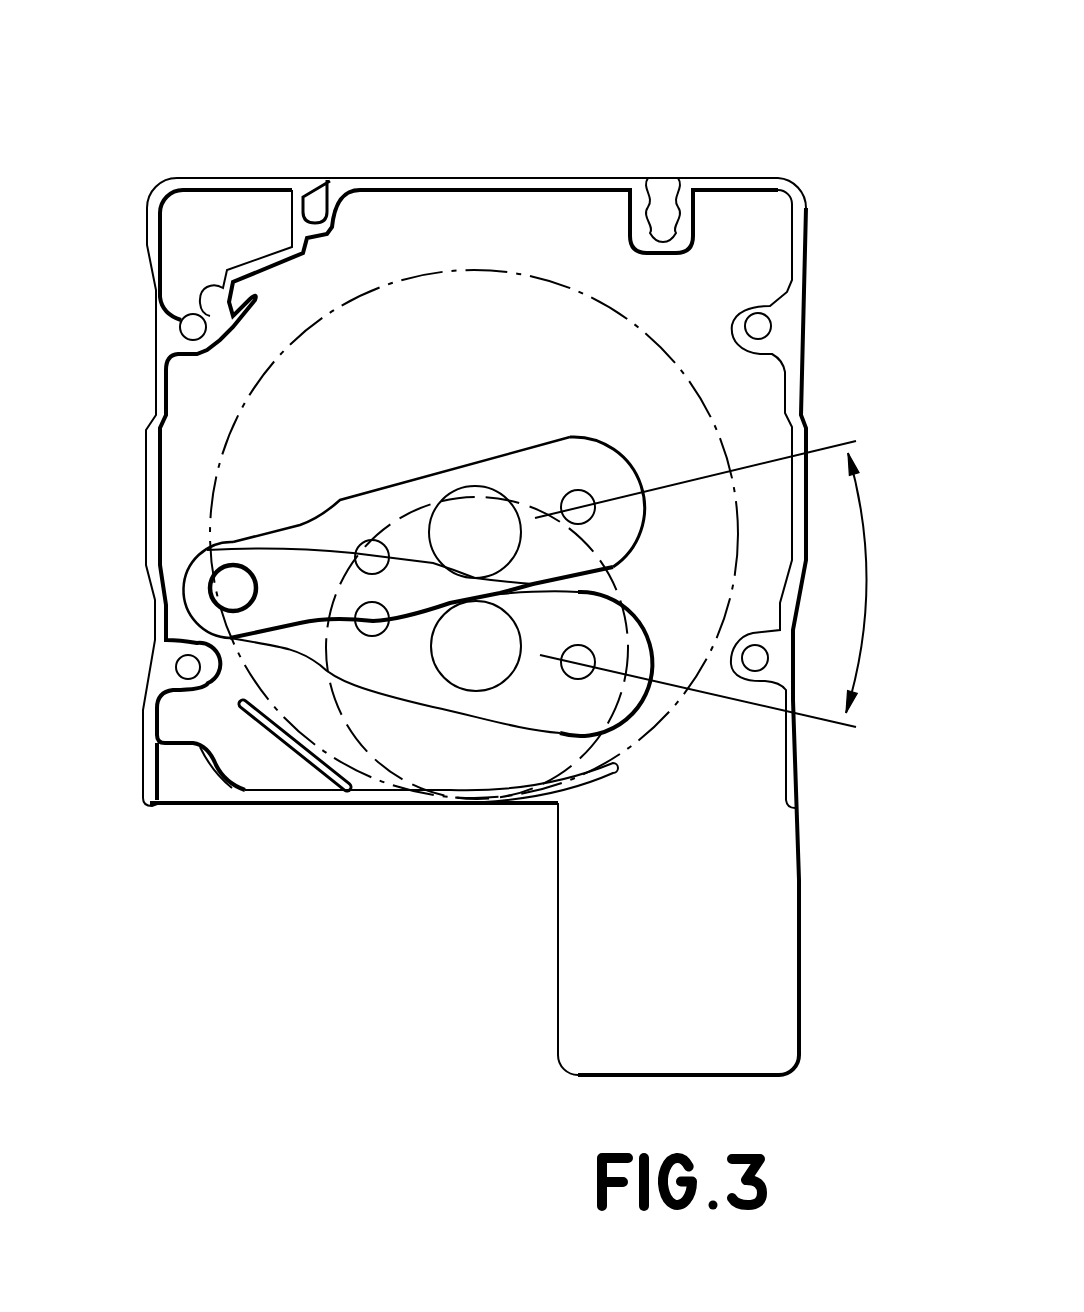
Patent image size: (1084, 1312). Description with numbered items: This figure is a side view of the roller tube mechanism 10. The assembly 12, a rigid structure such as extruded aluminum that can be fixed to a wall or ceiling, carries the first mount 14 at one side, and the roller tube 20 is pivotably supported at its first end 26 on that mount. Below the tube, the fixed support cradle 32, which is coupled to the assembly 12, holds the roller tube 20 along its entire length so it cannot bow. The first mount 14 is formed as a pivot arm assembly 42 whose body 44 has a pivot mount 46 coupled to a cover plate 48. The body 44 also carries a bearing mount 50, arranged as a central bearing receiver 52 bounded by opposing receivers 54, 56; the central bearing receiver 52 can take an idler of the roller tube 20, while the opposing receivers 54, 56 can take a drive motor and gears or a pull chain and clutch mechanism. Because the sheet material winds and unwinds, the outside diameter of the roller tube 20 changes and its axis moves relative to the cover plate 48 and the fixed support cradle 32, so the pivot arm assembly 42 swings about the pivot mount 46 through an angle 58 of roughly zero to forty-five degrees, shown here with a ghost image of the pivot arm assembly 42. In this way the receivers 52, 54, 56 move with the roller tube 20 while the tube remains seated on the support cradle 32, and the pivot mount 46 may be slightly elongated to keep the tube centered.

The roller tube mechanism 10 is at (541, 84).
The assembly 12 is at (167, 123).
The first mount 14 is at (818, 228).
The roller tube 20 is at (488, 270).
The first end 26 is at (186, 398).
The support cradle 32 is at (398, 807).
The pivot arm assembly 42 is at (177, 505).
The body 44 is at (426, 474).
The pivot mount 46 is at (227, 587).
The cover plate 48 is at (572, 928).
The bearing mount 50 is at (482, 462).
The central bearing receiver 52 is at (498, 548).
The opposing receiver 54 is at (581, 490).
The opposing receiver 56 is at (352, 552).
The angle 58 is at (870, 577).